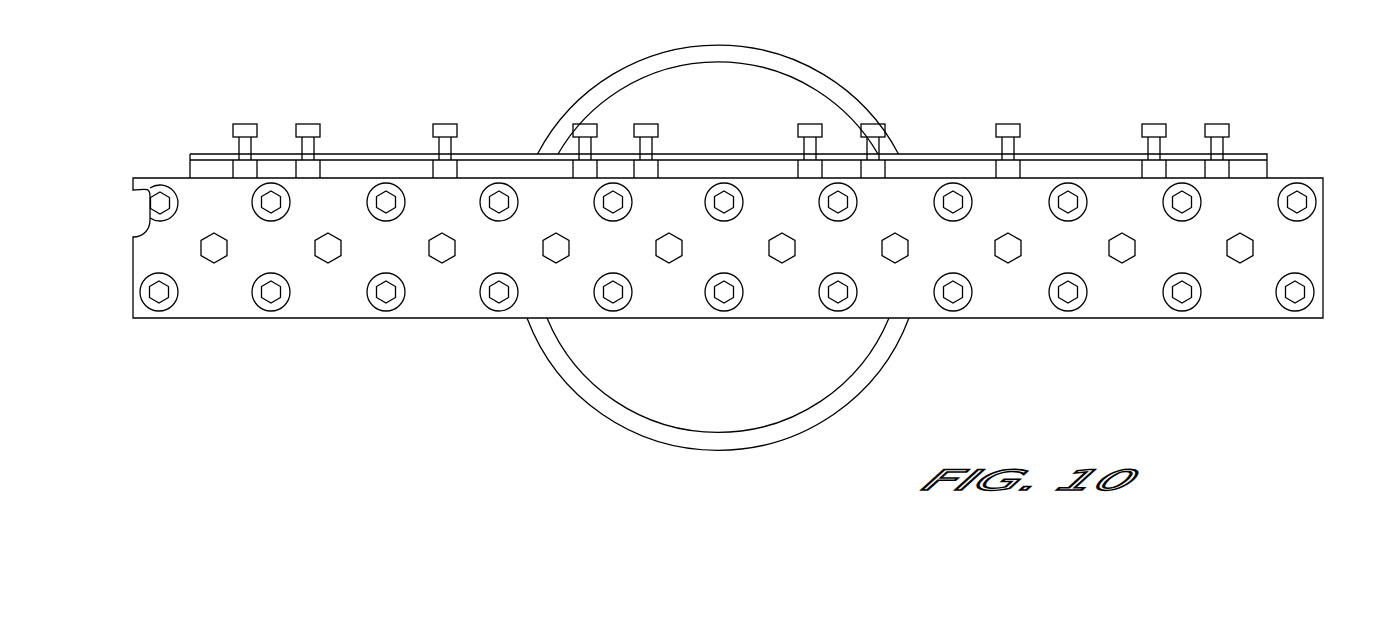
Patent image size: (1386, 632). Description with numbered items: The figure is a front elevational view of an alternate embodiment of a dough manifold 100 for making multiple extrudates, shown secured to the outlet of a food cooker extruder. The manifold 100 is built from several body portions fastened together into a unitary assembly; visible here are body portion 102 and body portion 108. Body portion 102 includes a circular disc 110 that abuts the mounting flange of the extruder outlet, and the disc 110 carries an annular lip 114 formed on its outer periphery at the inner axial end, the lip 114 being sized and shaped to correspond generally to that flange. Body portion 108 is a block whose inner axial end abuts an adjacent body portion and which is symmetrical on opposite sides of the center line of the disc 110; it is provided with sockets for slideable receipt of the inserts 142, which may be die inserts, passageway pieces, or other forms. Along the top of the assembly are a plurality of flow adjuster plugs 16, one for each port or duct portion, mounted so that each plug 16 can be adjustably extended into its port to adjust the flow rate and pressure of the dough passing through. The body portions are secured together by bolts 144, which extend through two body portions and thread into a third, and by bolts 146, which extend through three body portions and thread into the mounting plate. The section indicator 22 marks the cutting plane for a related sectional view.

The flow adjuster plug 16 is at (447, 124).
The section line 22 is at (108, 303).
The dough manifold 100 is at (833, 68).
The body portion 102 is at (653, 380).
The body portion 108 is at (1255, 205).
The circular disc 110 is at (777, 407).
The annular lip 114 is at (728, 438).
The insert 142 is at (218, 263).
The bolt 144 is at (158, 183).
The bolt 146 is at (387, 183).